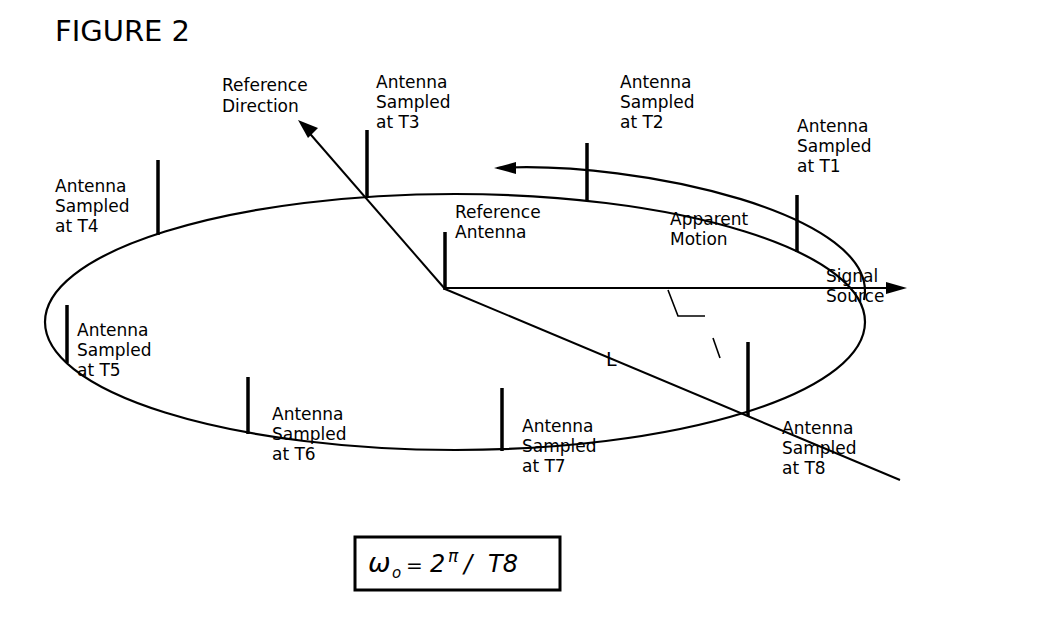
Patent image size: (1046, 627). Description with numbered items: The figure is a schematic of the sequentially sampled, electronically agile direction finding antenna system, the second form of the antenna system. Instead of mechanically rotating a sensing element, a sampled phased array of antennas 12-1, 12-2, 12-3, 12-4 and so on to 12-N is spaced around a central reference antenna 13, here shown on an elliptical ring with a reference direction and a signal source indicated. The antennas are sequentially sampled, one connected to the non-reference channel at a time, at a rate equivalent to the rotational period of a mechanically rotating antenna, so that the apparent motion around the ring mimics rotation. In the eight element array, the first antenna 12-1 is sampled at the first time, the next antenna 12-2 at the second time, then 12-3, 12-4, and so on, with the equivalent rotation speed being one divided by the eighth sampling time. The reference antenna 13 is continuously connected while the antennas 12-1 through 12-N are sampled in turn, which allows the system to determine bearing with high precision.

The reference antenna 13 is at (447, 271).
The sampled phased array antenna 12-1 is at (799, 222).
The sampled phased array antenna 12-2 is at (589, 156).
The sampled phased array antenna 12-3 is at (369, 157).
The sampled phased array antenna 12-4 is at (160, 186).
The sampled phased array antenna 12-N is at (751, 360).